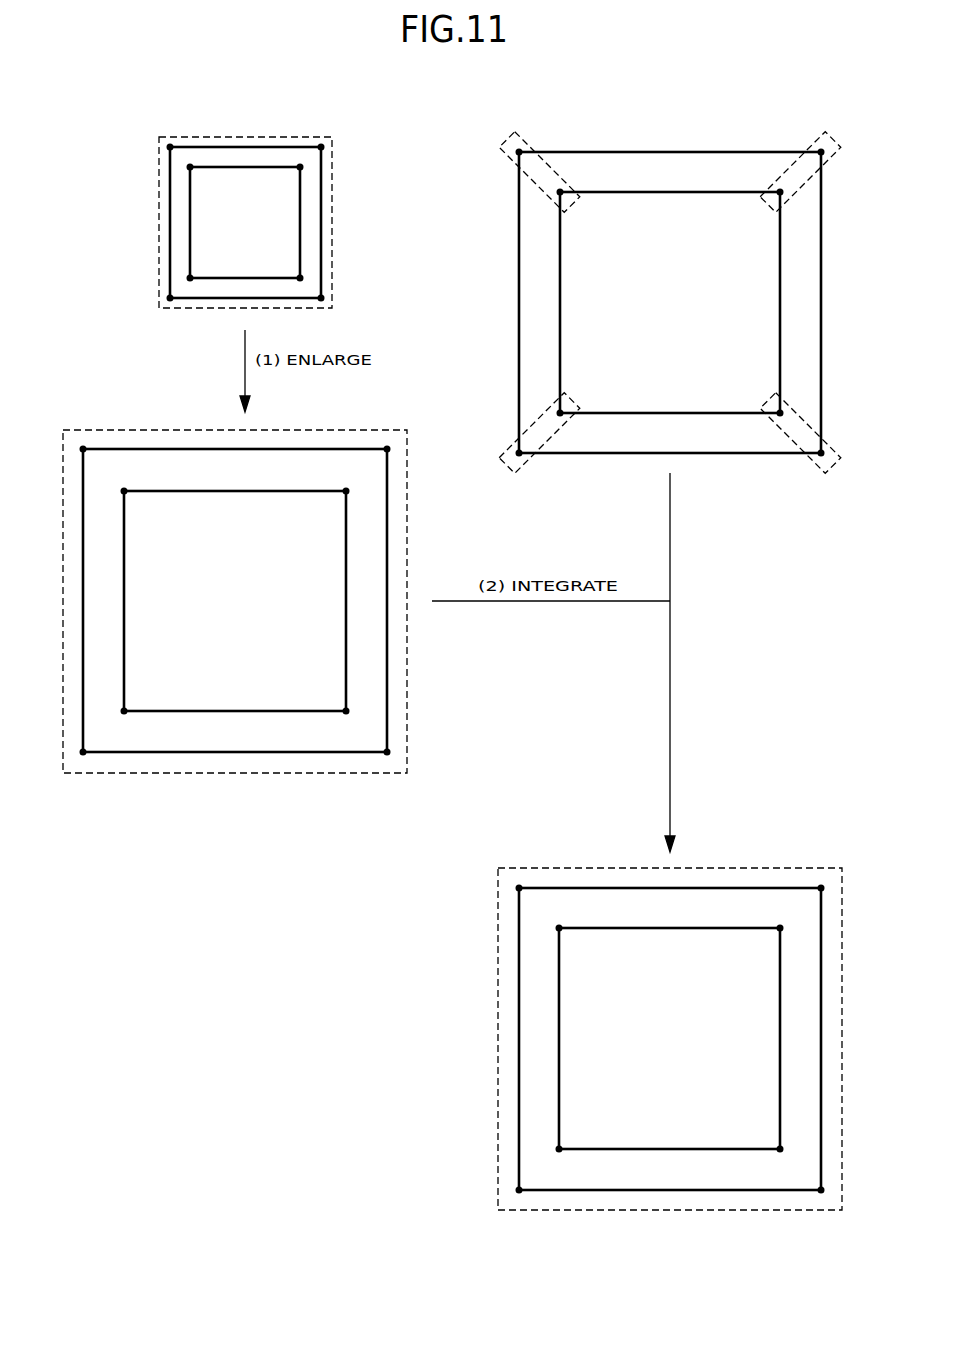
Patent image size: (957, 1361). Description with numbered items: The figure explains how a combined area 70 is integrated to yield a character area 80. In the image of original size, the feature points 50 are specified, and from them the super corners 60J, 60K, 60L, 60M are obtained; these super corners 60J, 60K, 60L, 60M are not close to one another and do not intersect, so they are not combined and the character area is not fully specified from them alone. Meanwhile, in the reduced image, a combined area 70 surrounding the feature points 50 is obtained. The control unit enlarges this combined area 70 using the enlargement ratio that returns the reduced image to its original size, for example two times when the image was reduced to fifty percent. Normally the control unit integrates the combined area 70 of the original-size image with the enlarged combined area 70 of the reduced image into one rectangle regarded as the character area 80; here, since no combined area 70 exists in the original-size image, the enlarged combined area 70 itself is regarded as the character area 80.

The feature points 50 is at (170, 147).
The combined area 70 is at (332, 215).
The super corner 60J is at (505, 146).
The super corner 60K is at (813, 144).
The super corner 60L is at (511, 447).
The super corner 60M is at (813, 465).
The character area 80 is at (797, 868).